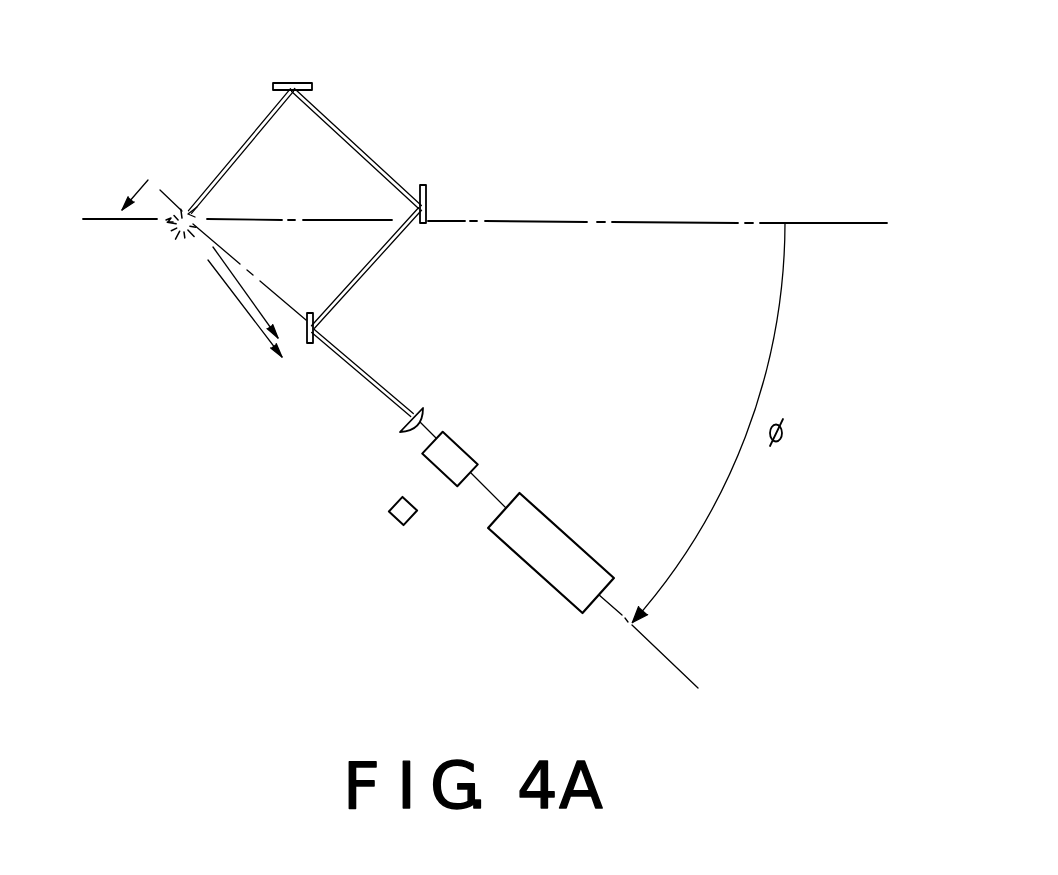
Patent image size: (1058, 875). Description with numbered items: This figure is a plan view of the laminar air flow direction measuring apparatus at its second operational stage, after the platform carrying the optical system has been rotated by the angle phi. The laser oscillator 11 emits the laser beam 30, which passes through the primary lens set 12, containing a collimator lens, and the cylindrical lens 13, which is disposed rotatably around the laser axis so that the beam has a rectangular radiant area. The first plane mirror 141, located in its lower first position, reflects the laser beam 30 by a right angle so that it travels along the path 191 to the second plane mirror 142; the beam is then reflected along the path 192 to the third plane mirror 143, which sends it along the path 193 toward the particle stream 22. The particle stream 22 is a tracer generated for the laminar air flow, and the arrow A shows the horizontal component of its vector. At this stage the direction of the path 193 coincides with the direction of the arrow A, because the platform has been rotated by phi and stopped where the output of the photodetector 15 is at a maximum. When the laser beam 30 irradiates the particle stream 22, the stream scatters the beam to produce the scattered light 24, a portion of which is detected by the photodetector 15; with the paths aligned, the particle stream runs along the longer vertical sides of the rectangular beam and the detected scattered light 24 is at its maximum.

The laser oscillator 11 is at (550, 587).
The primary lens set 12 is at (437, 470).
The cylindrical lens 13 is at (400, 432).
The photodetector 15 is at (390, 518).
The particle stream 22 is at (168, 228).
The scattered light 24 is at (242, 312).
The laser beam 30 is at (363, 370).
The first plane mirror 141 is at (308, 343).
The second plane mirror 142 is at (432, 193).
The third plane mirror 143 is at (287, 83).
The path 191 is at (370, 268).
The path 192 is at (332, 123).
The path 193 is at (230, 157).
The arrow A is at (146, 181).